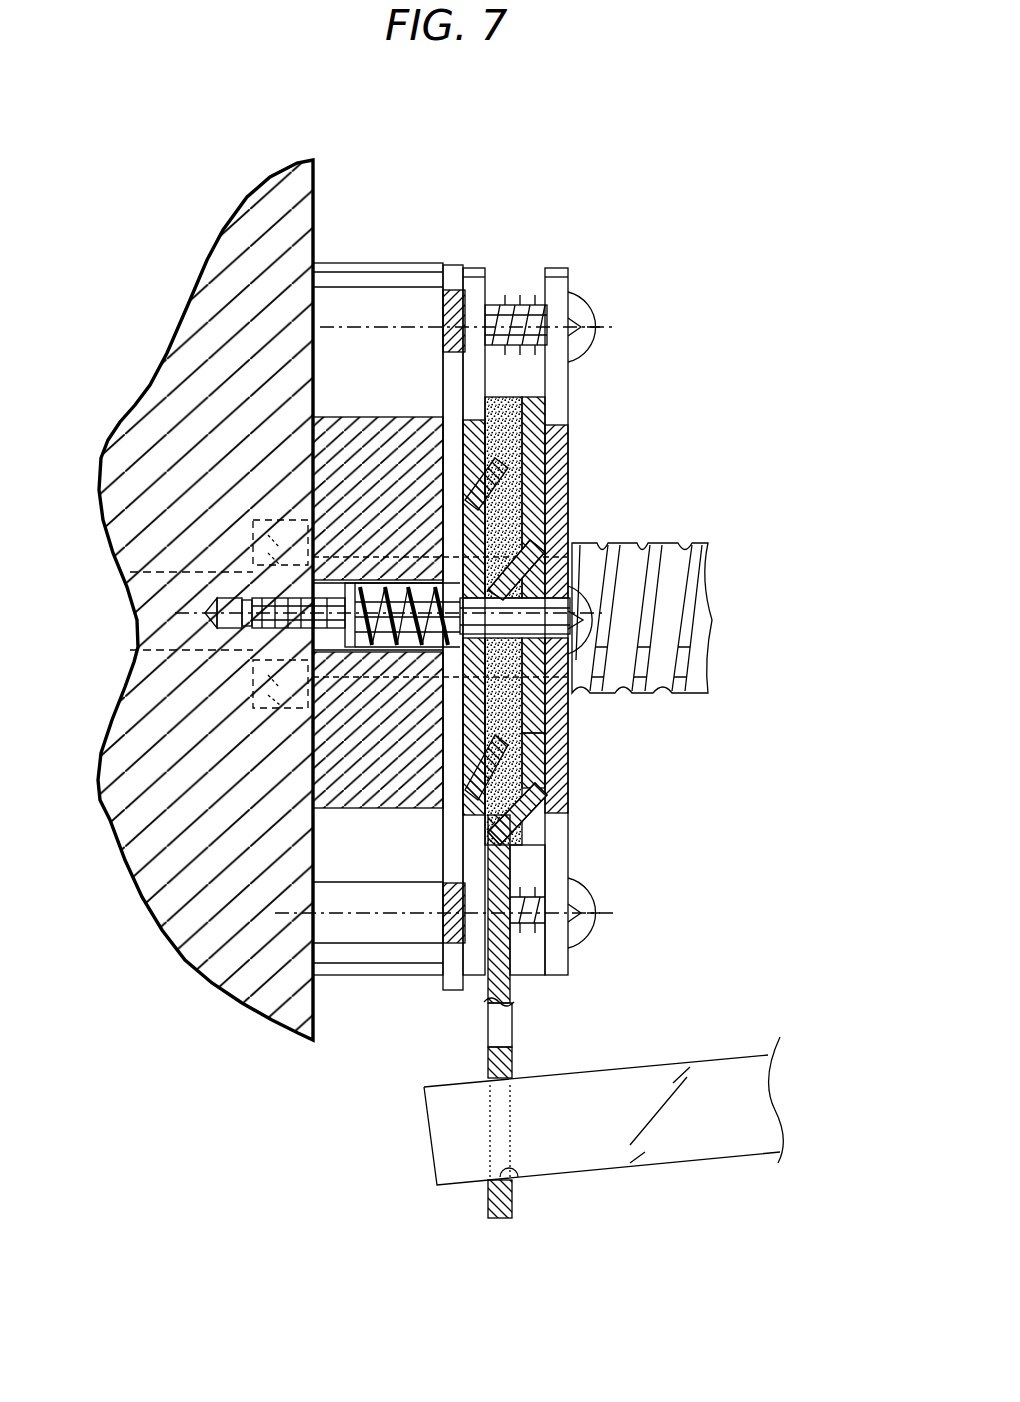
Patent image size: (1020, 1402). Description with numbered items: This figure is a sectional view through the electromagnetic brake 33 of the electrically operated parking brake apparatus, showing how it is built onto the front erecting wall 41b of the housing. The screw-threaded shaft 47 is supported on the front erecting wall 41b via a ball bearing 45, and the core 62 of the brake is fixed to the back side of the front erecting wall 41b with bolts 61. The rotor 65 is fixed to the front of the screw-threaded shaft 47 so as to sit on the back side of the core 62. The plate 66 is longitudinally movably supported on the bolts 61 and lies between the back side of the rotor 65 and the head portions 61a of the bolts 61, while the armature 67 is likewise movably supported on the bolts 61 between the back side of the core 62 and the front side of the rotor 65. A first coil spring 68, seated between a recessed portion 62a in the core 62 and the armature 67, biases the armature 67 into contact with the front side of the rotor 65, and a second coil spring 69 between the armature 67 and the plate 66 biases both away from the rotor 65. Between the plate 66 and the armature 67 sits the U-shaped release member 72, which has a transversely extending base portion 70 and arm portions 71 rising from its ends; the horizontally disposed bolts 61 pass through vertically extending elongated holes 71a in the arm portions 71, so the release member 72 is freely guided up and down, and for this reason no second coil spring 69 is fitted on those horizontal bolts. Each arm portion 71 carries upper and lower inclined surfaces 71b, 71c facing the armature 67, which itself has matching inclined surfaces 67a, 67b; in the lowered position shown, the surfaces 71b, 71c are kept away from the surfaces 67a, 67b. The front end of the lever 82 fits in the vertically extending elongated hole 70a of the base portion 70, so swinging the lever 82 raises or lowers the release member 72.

The front erecting wall 41b is at (303, 190).
The core 62 is at (377, 258).
The recessed portion 62a is at (397, 655).
The electromagnetic brake 33 is at (543, 245).
The second coil spring 69 is at (522, 300).
The bolt 61 is at (604, 297).
The head portion 61a is at (583, 345).
The first coil spring 68 is at (440, 322).
The armature 67 is at (440, 397).
The inclined surface 67a is at (487, 463).
The inclined surface 67b is at (500, 800).
The rotor 65 is at (503, 403).
The plate 66 is at (575, 457).
The arm portion 71 is at (484, 867).
The elongated hole 71a is at (537, 720).
The inclined surface 71b is at (520, 497).
The inclined surface 71c is at (547, 788).
The release member 72 is at (485, 1032).
The base portion 70 is at (484, 1218).
The elongated hole 70a is at (525, 1172).
The lever 82 is at (724, 1165).
The screw-threaded shaft 47 is at (674, 558).
The ball bearing 45 is at (278, 515).